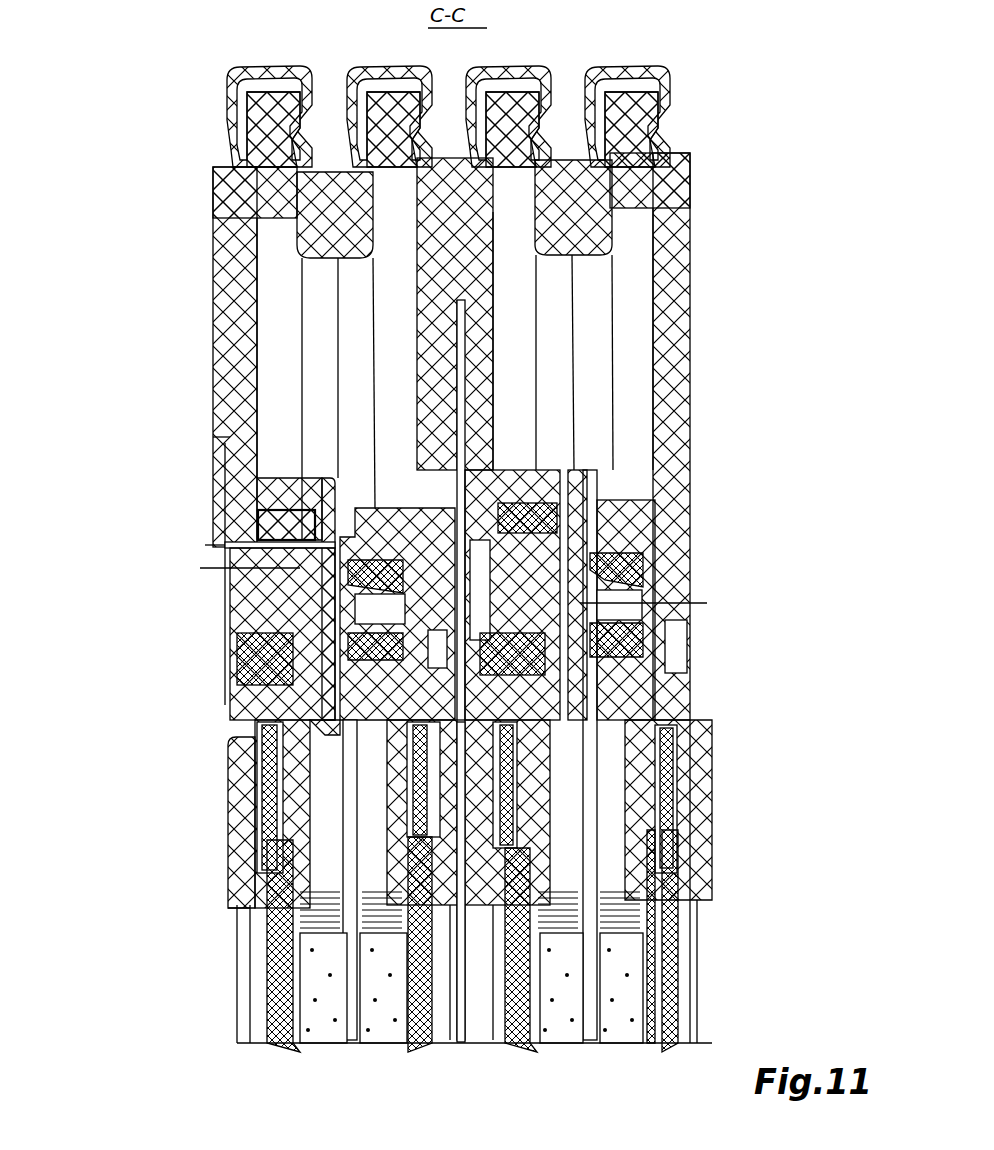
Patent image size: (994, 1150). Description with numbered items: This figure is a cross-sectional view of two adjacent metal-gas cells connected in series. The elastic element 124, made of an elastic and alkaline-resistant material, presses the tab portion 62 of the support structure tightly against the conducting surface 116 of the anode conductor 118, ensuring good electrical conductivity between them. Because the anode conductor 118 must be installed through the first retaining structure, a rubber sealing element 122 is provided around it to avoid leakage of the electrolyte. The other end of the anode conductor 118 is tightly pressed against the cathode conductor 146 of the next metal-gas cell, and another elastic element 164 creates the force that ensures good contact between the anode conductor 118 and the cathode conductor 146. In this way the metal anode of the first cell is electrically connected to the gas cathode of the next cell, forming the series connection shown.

The rubber sealing element 122 is at (462, 512).
The anode conductor 118 is at (455, 560).
The cathode conductor 146 is at (255, 483).
The elastic element 164 is at (230, 568).
The conducting surface 116 is at (575, 493).
The tab portion 62 is at (595, 540).
The elastic element 124 is at (620, 538).